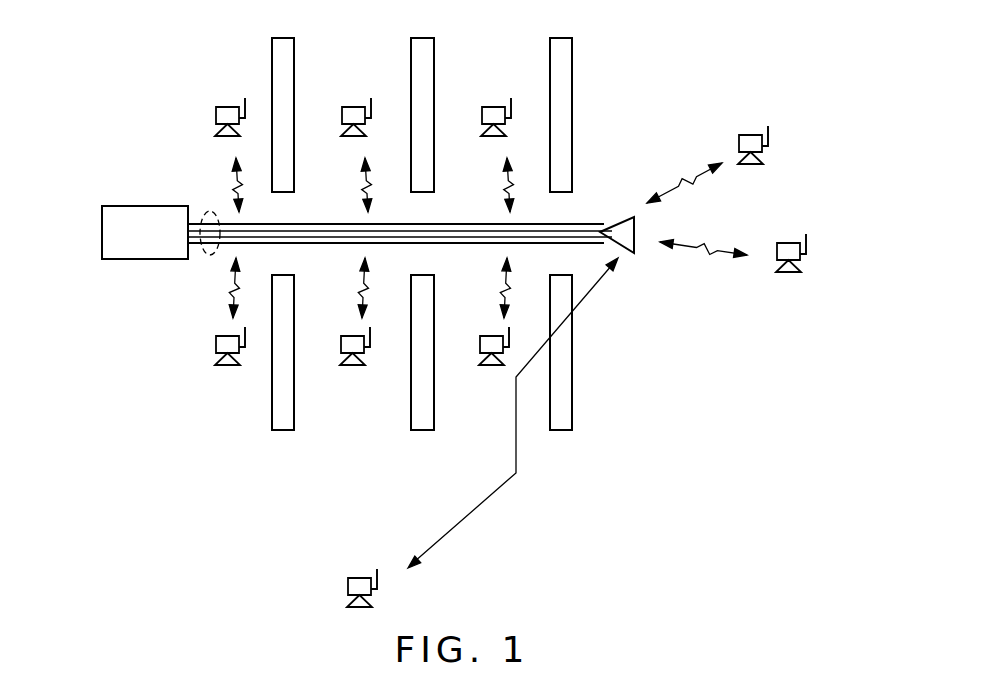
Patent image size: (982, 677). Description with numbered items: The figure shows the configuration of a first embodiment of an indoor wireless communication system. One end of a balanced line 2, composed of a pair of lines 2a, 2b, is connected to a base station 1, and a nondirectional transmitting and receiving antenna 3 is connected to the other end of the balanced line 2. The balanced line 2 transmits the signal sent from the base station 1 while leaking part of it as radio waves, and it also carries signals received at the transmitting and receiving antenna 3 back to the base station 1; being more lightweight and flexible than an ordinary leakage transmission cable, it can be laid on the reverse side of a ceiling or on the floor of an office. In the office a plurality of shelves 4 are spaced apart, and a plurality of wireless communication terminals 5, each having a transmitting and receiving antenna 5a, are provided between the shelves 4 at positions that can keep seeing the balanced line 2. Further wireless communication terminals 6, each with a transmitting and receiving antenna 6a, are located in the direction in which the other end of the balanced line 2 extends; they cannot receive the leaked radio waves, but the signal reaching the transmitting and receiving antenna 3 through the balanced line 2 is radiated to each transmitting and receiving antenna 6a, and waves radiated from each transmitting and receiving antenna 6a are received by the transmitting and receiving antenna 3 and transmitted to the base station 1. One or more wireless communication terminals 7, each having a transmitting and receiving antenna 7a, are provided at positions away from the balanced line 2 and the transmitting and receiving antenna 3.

The base station 1 is at (144, 206).
The balanced line 2 is at (400, 229).
The line 2a is at (335, 224).
The line 2b is at (313, 244).
The nondirectional transmitting and receiving antenna 3 is at (628, 217).
The shelves 4 is at (294, 46).
The wireless communication terminals 5 is at (226, 106).
The transmitting and receiving antenna 5a is at (246, 99).
The wireless communication terminals 6 is at (748, 134).
The transmitting and receiving antenna 6a is at (769, 127).
The wireless communication terminal 7 is at (358, 577).
The transmitting and receiving antenna 7a is at (378, 568).